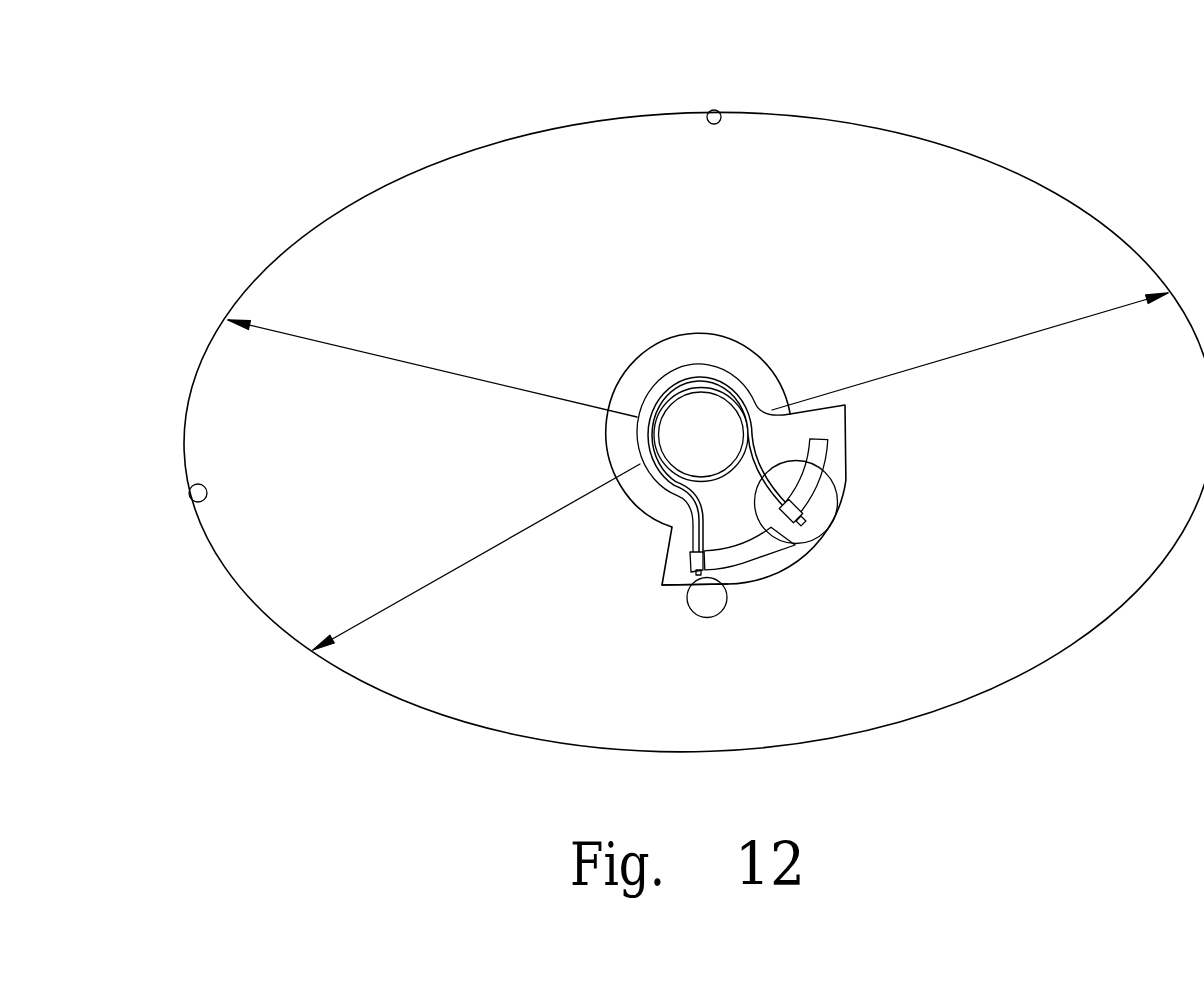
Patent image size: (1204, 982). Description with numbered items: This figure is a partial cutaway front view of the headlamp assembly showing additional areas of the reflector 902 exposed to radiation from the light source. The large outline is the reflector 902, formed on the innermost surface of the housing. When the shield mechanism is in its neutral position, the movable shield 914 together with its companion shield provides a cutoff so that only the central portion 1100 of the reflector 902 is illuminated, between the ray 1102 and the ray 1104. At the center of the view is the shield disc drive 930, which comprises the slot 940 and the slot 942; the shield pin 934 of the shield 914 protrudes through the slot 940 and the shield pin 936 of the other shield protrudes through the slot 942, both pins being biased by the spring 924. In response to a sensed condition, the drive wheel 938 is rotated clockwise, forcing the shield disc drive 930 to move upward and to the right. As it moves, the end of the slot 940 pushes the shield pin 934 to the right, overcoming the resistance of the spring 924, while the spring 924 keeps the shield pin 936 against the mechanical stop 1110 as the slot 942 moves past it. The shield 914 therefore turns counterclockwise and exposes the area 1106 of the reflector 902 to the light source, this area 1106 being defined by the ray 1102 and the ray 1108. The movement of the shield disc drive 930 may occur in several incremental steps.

The reflector 902 is at (535, 136).
The central portion 1100 is at (709, 110).
The ray 1102 is at (357, 348).
The ray 1104 is at (1024, 333).
The area 1106 is at (190, 498).
The ray 1108 is at (382, 606).
The movable shield 914 is at (633, 504).
The spring 924 is at (828, 463).
The slot 942 is at (823, 478).
The mechanical stop 1110 is at (800, 506).
The shield pin 936 is at (812, 542).
The slot 940 is at (747, 578).
The shield pin 934 is at (689, 557).
The shield disc drive 930 is at (734, 586).
The drive wheel 938 is at (698, 619).